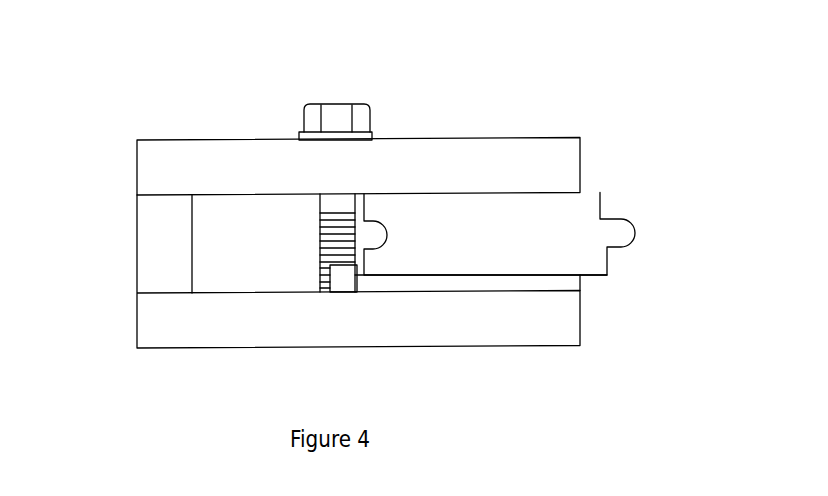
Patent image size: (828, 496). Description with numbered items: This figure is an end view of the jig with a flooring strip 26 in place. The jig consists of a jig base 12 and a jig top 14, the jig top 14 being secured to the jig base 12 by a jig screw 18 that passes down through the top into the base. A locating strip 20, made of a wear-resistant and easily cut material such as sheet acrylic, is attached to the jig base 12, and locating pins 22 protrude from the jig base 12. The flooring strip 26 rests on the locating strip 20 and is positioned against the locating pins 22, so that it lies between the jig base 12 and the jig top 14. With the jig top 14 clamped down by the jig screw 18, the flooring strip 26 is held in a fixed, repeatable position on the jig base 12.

The jig base 12 is at (178, 320).
The jig top 14 is at (480, 165).
The jig screw 18 is at (342, 117).
The locating strip 20 is at (550, 283).
The locating pins 22 is at (344, 275).
The flooring strip 26 is at (563, 228).